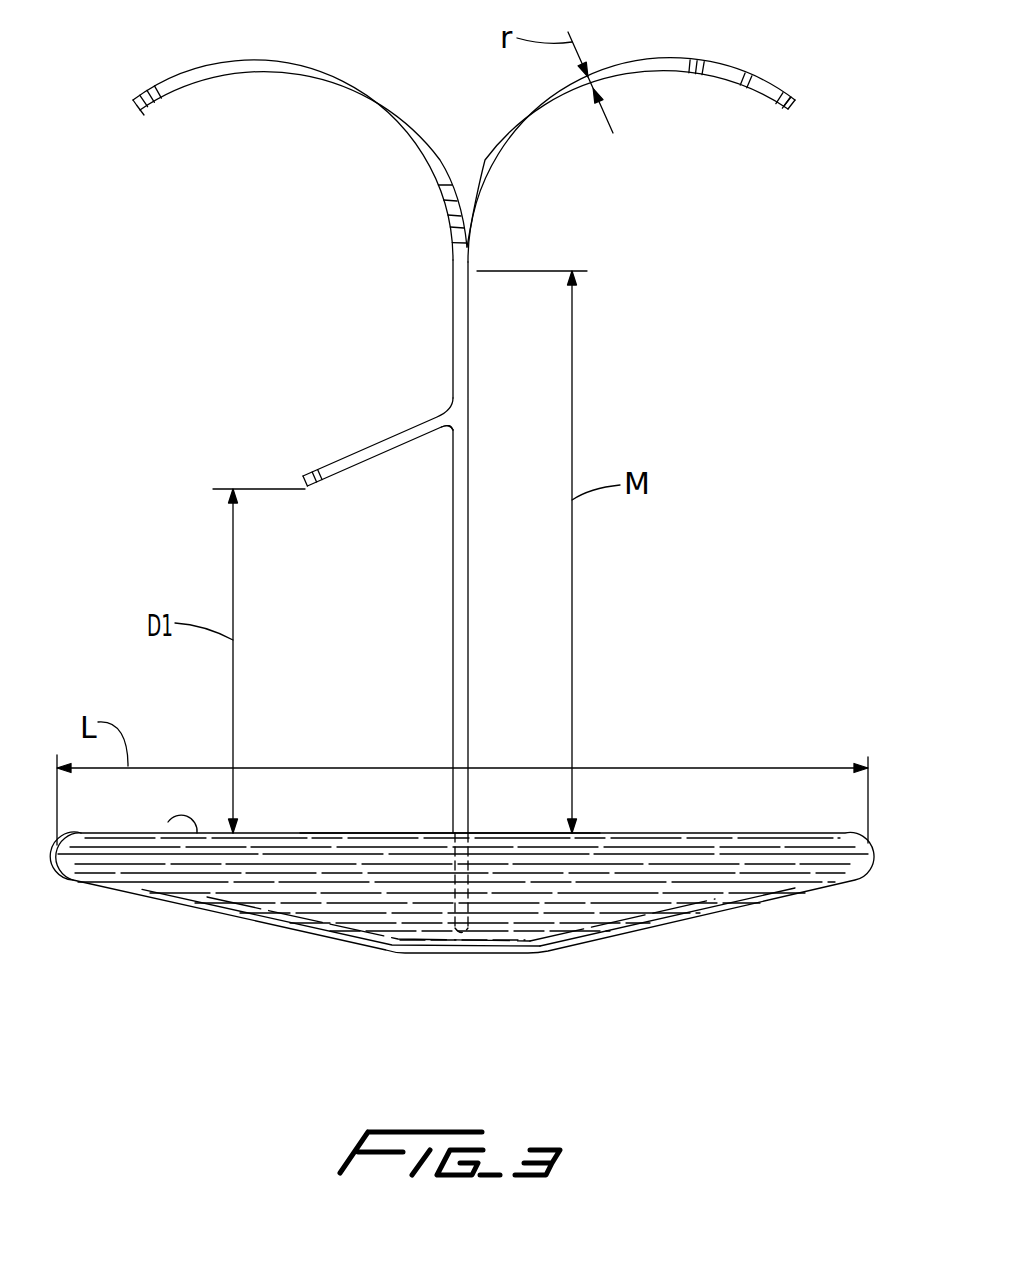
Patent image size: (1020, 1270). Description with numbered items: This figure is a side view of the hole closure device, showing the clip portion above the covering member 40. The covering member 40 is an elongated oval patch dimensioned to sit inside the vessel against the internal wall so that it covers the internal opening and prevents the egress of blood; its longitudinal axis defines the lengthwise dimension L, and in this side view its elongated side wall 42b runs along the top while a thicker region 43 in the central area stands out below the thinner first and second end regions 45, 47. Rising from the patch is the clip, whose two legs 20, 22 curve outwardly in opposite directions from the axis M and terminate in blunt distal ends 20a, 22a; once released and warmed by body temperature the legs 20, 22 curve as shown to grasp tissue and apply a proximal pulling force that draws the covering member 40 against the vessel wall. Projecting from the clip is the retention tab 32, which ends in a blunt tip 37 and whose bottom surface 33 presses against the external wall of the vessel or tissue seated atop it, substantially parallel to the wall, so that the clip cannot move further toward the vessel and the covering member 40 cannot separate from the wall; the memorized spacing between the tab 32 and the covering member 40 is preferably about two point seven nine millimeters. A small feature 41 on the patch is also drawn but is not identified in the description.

The clip leg 20 is at (295, 68).
The blunt distal end 20a is at (135, 107).
The clip leg 22 is at (662, 62).
The blunt distal end 22a is at (795, 112).
The retention tab 32 is at (388, 438).
The bottom surface 33 is at (425, 432).
The blunt tip 37 is at (298, 477).
The covering member 40 is at (670, 847).
The tab 41 is at (168, 822).
The side wall 42b is at (352, 832).
The thicker region 43 is at (374, 927).
The first end region 45 is at (124, 858).
The second end region 47 is at (746, 878).